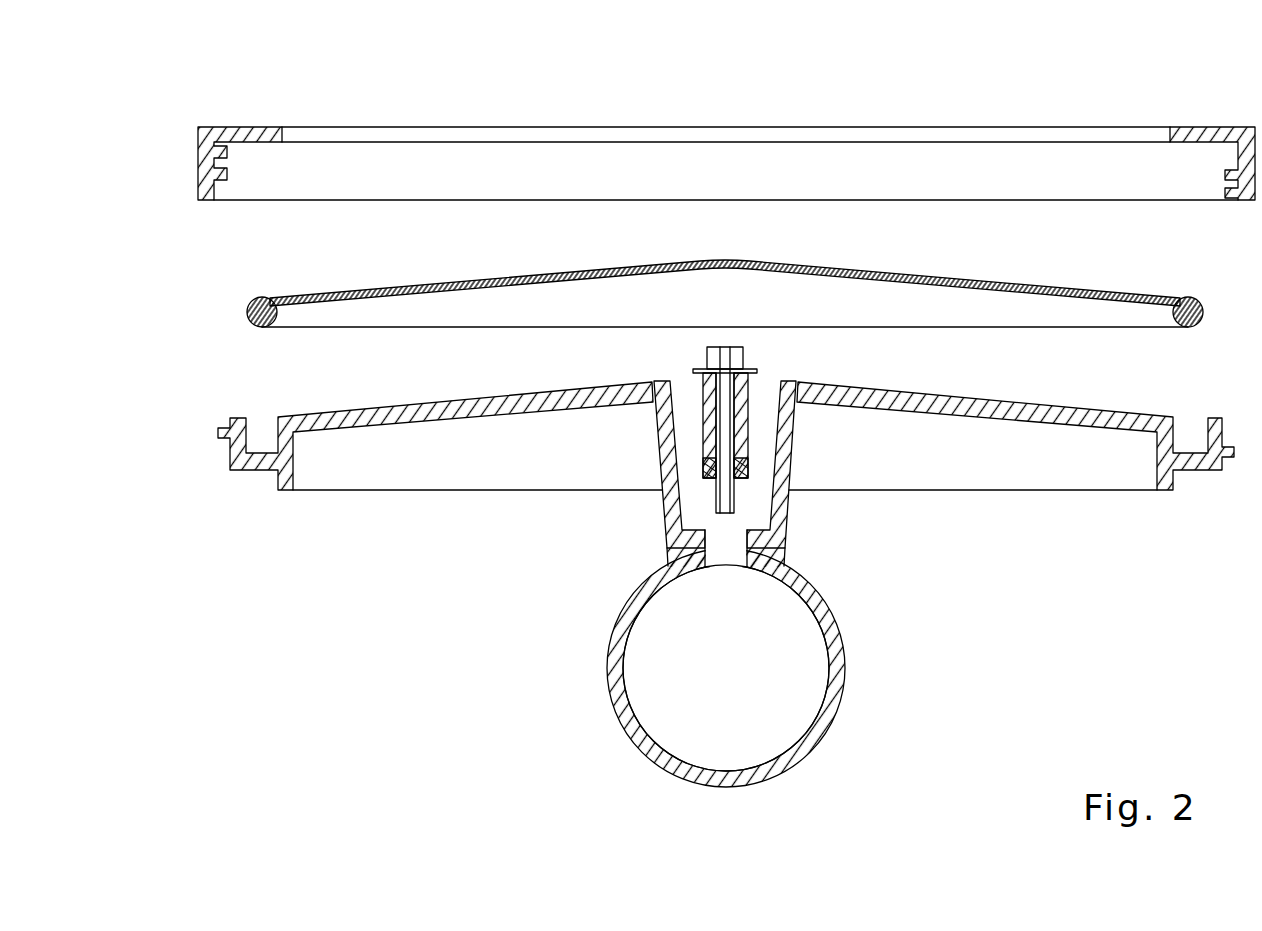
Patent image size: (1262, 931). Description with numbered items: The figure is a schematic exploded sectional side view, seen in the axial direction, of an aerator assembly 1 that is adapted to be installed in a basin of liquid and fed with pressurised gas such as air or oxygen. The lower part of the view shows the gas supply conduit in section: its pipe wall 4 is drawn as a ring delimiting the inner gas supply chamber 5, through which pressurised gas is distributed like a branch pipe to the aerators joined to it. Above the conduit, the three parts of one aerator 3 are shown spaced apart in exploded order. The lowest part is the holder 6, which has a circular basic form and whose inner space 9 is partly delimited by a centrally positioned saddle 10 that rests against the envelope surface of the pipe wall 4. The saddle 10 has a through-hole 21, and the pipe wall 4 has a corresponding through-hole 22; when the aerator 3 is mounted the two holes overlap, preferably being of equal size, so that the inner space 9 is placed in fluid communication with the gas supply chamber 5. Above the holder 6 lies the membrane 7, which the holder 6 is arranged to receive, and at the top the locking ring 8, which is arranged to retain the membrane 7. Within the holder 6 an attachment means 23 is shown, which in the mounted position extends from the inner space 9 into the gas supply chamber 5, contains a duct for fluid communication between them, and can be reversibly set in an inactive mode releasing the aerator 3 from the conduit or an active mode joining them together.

The aerator assembly 1 is at (705, 88).
The aerator 3 is at (132, 129).
The locking ring 8 is at (196, 162).
The membrane 7 is at (245, 311).
The holder 6 is at (229, 466).
The inner space 9 is at (683, 444).
The saddle 10 is at (683, 543).
The through-hole 21 is at (730, 540).
The through-hole 22 is at (729, 558).
The attachment means 23 is at (750, 437).
The pipe wall 4 is at (619, 618).
The gas supply chamber 5 is at (637, 660).